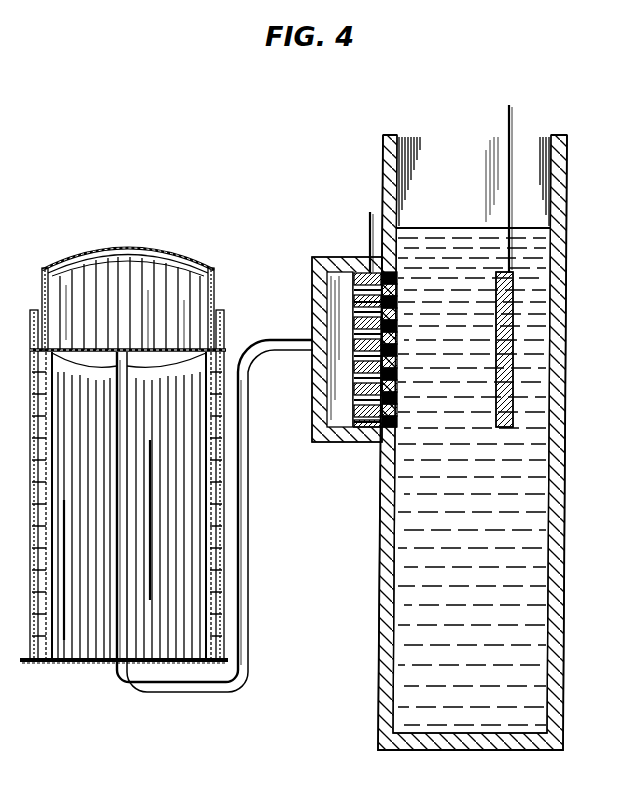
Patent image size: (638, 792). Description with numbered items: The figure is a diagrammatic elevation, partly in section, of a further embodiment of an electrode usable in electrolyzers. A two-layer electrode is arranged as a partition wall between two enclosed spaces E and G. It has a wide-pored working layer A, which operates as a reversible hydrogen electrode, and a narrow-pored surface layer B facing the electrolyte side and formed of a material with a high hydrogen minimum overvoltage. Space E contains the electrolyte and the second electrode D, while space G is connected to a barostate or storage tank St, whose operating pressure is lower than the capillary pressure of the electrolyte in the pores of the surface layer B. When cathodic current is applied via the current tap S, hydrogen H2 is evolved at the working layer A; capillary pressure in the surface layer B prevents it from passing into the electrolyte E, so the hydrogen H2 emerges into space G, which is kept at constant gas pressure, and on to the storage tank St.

The storage tank St is at (163, 258).
The hydrogen gas space H2 is at (148, 308).
The space G is at (343, 326).
The wide-pored working layer A is at (357, 282).
The current tap S is at (368, 226).
The narrow-pored surface layer B is at (385, 432).
The second electrode D is at (517, 300).
The space containing the electrolyte E is at (515, 486).